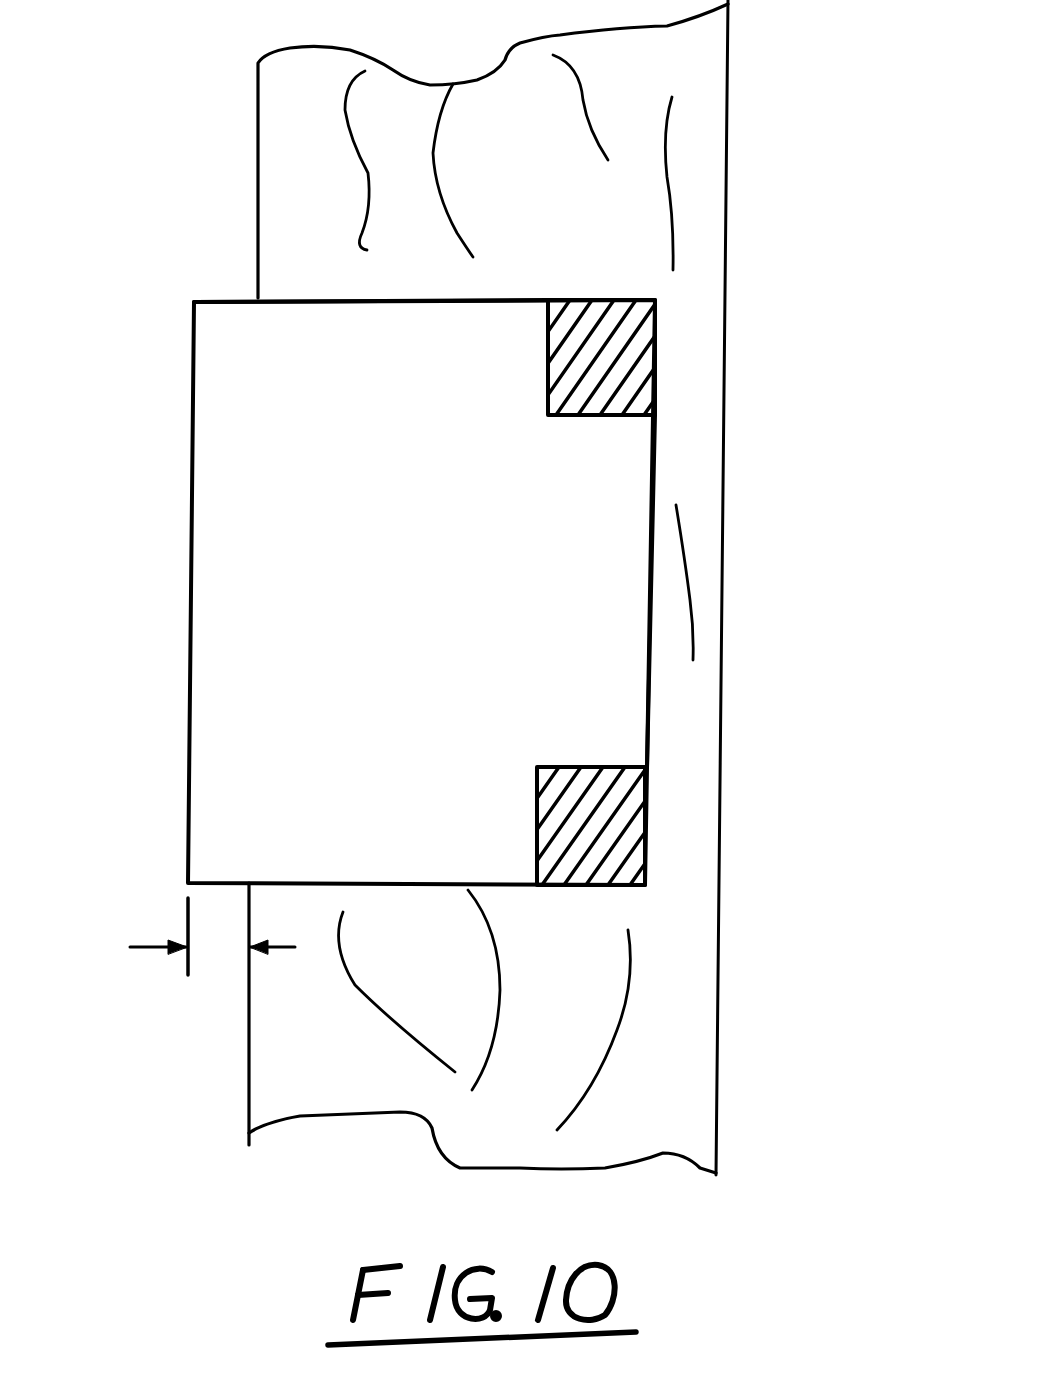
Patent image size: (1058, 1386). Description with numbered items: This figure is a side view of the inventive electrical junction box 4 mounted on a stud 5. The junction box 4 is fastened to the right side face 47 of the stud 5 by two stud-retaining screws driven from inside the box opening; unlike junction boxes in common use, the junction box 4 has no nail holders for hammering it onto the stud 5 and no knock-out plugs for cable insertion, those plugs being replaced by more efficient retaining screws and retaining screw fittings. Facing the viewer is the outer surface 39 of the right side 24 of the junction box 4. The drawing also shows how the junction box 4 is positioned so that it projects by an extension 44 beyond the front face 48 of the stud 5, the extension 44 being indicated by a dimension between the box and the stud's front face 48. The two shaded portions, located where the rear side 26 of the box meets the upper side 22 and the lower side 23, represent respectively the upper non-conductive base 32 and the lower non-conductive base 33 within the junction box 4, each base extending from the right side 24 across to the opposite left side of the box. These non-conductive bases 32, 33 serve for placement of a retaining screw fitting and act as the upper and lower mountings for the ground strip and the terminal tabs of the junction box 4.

The junction box 4 is at (208, 253).
The stud 5 is at (727, 153).
The upper side 22 is at (480, 277).
The lower side 23 is at (432, 897).
The right side 24 is at (562, 675).
The rear side 26 is at (670, 485).
The upper non-conductive base 32 is at (656, 347).
The lower non-conductive base 33 is at (652, 838).
The outer surface 39 is at (535, 627).
The extension 44 is at (147, 931).
The right side face 47 is at (658, 1045).
The front face 48 is at (240, 1060).